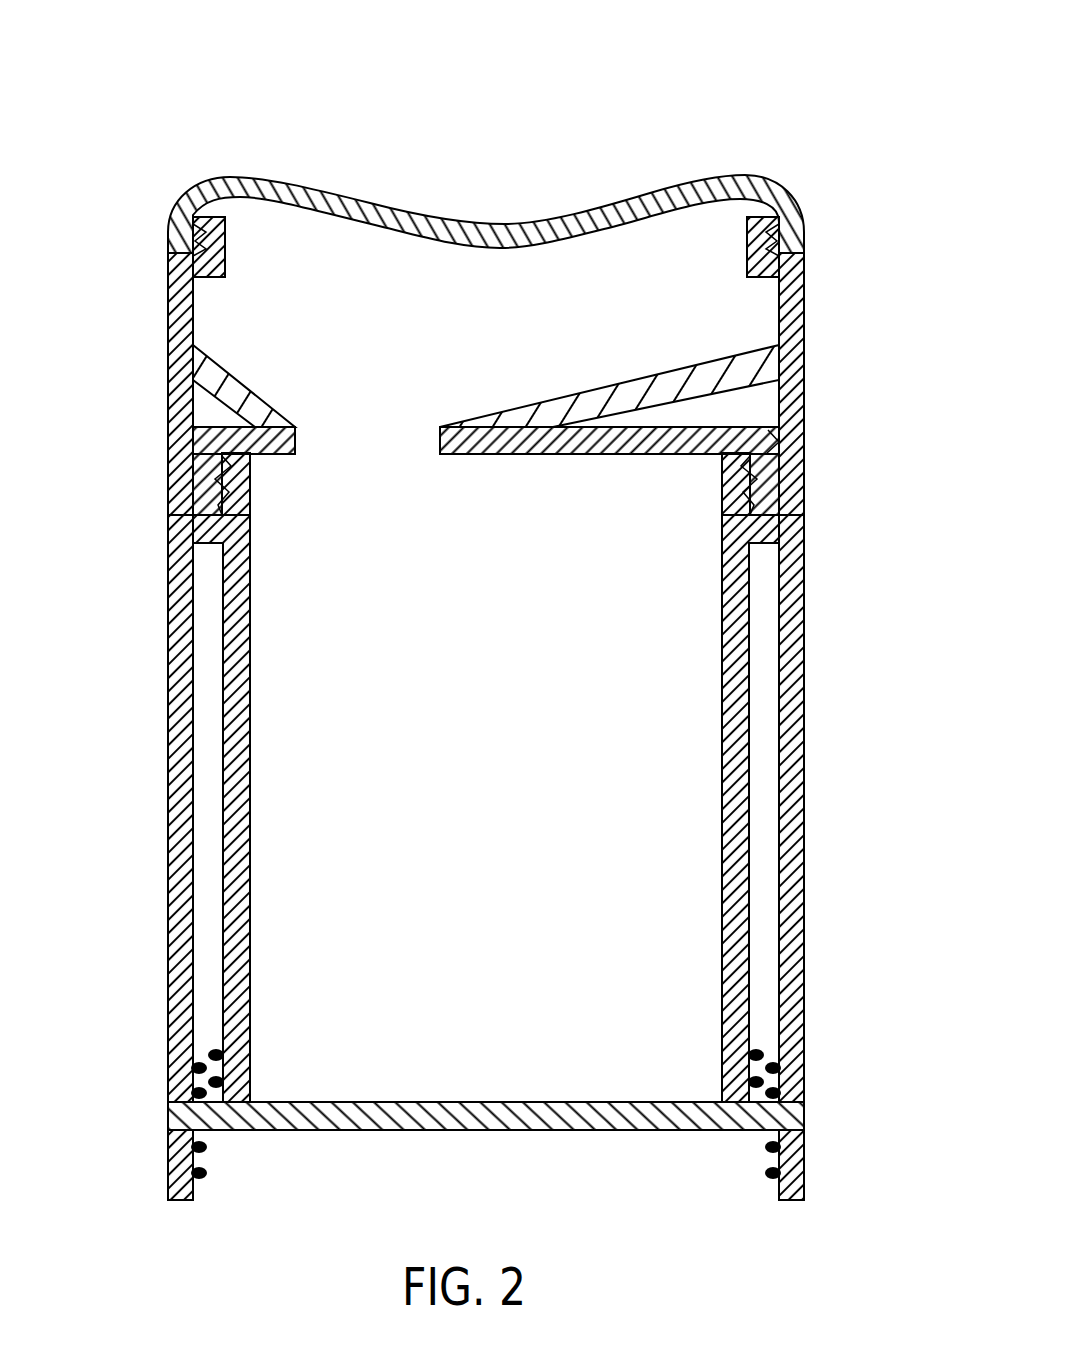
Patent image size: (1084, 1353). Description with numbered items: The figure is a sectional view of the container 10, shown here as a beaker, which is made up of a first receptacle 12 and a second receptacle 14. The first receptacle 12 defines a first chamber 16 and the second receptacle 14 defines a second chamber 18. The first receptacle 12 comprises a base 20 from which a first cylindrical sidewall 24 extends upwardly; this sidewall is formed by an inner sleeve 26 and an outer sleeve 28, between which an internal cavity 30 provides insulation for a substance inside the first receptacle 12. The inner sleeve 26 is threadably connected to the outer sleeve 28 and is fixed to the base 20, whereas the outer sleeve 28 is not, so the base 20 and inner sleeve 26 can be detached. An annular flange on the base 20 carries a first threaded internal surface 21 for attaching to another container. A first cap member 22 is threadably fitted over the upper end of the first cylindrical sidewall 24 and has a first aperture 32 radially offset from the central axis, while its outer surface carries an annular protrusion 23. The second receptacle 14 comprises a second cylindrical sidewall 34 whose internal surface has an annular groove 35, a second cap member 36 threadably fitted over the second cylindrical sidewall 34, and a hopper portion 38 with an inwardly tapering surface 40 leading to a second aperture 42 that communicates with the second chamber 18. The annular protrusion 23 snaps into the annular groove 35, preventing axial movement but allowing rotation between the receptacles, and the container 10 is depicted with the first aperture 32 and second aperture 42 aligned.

The container 10 is at (505, 641).
The first receptacle 12 is at (500, 750).
The second receptacle 14 is at (514, 211).
The first chamber 16 is at (692, 726).
The second chamber 18 is at (749, 326).
The base 20 is at (715, 1132).
The first threaded internal surface 21 is at (775, 1138).
The first cap member 22 is at (772, 440).
The annular protrusion 23 is at (793, 462).
The first cylindrical sidewall 24 is at (808, 731).
The inner sleeve 26 is at (745, 981).
The outer sleeve 28 is at (795, 840).
The internal cavity 30 is at (763, 608).
The first aperture 32 is at (220, 432).
The second cylindrical sidewall 34 is at (170, 333).
The annular groove 35 is at (190, 468).
The second cap member 36 is at (190, 203).
The hopper portion 38 is at (790, 355).
The inwardly tapering surface 40 is at (505, 319).
The second aperture 42 is at (240, 405).